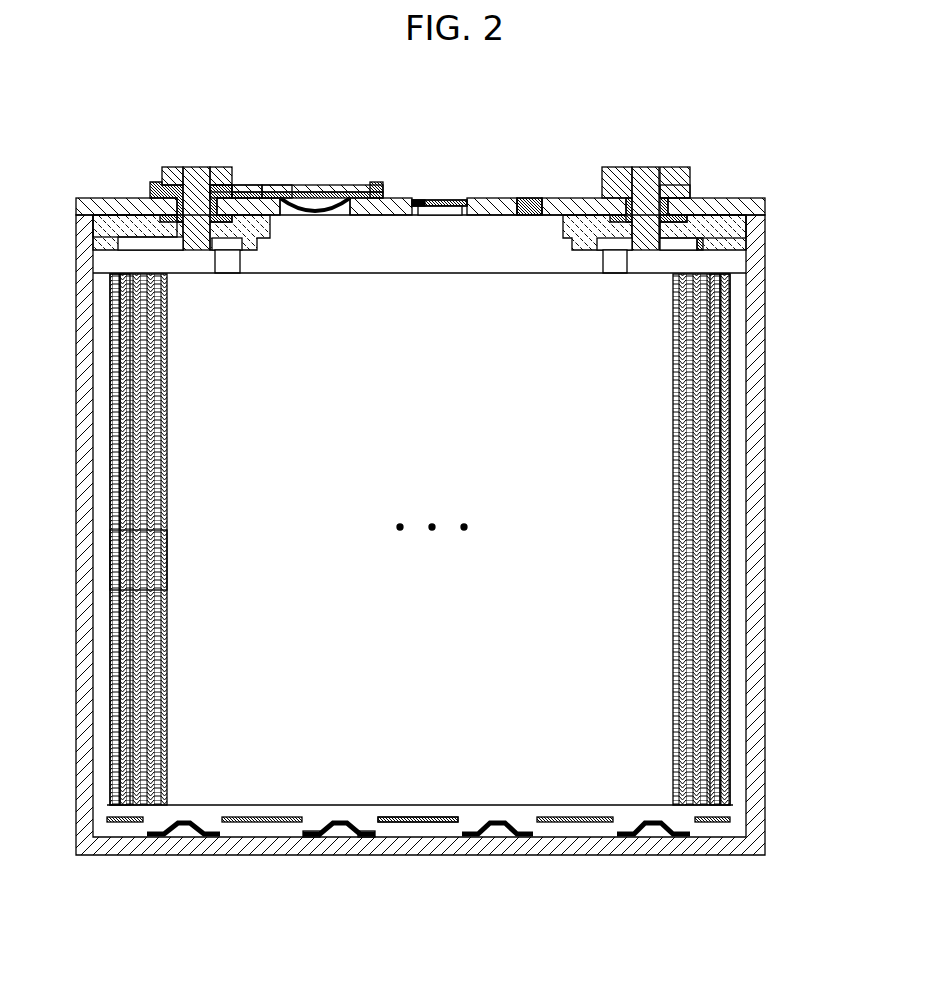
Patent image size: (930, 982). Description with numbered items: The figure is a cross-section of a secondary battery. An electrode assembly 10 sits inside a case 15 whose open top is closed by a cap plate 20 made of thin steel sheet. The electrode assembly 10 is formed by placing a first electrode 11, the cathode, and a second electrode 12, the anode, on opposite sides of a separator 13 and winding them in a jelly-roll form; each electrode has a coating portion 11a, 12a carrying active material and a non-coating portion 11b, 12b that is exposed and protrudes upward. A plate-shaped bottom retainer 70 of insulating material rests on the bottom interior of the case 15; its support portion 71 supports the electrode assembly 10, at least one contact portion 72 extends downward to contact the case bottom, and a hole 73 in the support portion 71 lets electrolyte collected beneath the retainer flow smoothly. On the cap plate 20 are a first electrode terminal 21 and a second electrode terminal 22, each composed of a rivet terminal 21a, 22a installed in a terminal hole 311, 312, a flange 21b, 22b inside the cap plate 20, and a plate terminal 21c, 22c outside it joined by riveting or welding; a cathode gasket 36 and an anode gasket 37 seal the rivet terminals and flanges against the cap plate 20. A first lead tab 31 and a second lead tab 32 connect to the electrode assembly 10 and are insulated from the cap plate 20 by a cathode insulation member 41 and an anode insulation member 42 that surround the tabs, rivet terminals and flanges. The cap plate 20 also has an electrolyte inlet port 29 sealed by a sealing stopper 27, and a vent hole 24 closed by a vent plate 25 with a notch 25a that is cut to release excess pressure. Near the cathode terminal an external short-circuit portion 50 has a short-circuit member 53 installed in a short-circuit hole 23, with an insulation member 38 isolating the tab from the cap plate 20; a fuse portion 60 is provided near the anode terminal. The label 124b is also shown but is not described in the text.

The electrode assembly 10 is at (106, 468).
The first electrode 11 is at (34, 295).
The coating portion 11a is at (112, 392).
The non-coating portion 11b is at (113, 308).
The second electrode 12 is at (806, 287).
The coating portion 12a is at (730, 388).
The non-coating portion 12b is at (728, 300).
The separator 13 is at (112, 578).
The case 15 is at (765, 593).
The cap plate 20 is at (505, 198).
The first electrode terminal 21 is at (196, 165).
The rivet terminal 21a is at (200, 257).
The flange 21b is at (246, 190).
The plate terminal 21c is at (175, 167).
The second electrode terminal 22 is at (648, 165).
The rivet terminal 22a is at (640, 165).
The flange 22b is at (610, 240).
The plate terminal 22c is at (690, 178).
The short-circuit hole 23 is at (346, 206).
The vent hole 24 is at (445, 208).
The vent plate 25 is at (462, 200).
The notch 25a is at (440, 200).
The sealing stopper 27 is at (530, 198).
The electrolyte inlet port 29 is at (522, 212).
The first lead tab 31 is at (150, 243).
The second lead tab 32 is at (740, 243).
The cathode gasket 36 is at (147, 198).
The anode gasket 37 is at (618, 190).
The insulation member 38 is at (378, 182).
The cathode insulation member 41 is at (100, 222).
The anode insulation member 42 is at (740, 222).
The external short-circuit portion 50 is at (328, 183).
The short-circuit member 53 is at (316, 214).
The fuse portion 60 is at (703, 248).
The bottom retainer 70 is at (104, 823).
The support portion 71 is at (427, 823).
The contact portion 72 is at (348, 838).
The hole 73 is at (363, 820).
The terminal plate opening 124b is at (276, 190).
The terminal hole 311 is at (228, 185).
The terminal hole 312 is at (660, 188).